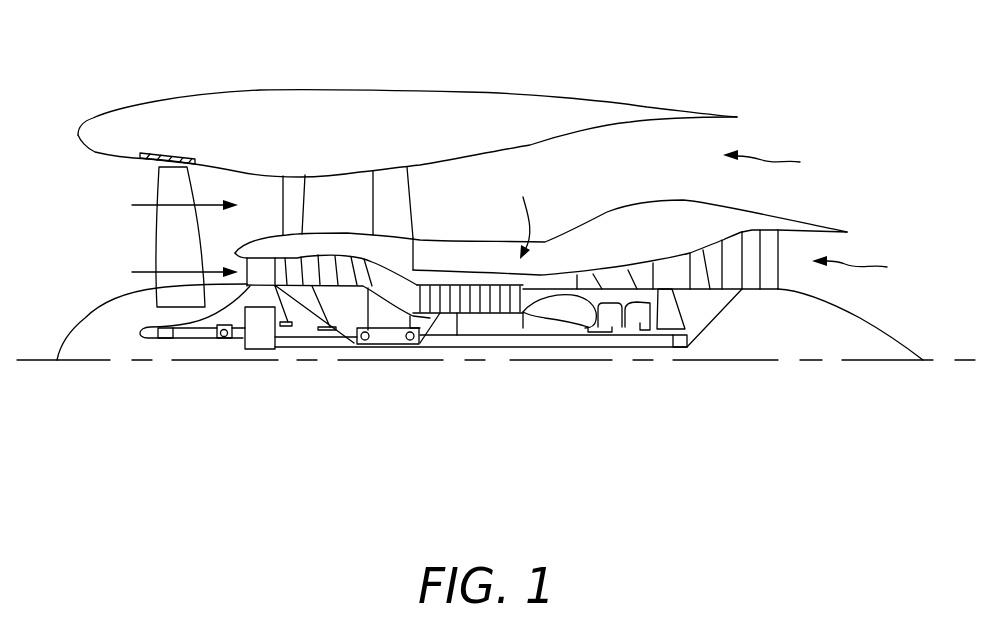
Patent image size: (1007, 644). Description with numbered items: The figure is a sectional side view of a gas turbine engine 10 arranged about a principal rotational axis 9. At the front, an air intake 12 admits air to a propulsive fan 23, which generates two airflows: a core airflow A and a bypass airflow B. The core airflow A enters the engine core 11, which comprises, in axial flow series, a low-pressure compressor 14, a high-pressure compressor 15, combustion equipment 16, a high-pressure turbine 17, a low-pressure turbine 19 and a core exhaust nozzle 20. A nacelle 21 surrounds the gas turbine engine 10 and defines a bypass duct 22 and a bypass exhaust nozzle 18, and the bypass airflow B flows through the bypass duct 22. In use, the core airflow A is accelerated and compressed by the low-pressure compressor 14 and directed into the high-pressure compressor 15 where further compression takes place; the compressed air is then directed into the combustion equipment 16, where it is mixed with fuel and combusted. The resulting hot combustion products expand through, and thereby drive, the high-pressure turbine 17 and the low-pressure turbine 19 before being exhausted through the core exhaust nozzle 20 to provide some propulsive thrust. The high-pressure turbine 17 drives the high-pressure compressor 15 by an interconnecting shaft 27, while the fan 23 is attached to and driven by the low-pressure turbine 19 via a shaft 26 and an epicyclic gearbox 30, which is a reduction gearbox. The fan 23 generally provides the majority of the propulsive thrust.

The principal rotational axis 9 is at (730, 361).
The gas turbine engine 10 is at (153, 104).
The core 11 is at (530, 215).
The air intake 12 is at (99, 183).
The low-pressure compressor 14 is at (328, 263).
The high-pressure compressor 15 is at (475, 297).
The combustion equipment 16 is at (552, 302).
The high-pressure turbine 17 is at (613, 272).
The low-pressure turbine 19 is at (750, 250).
The bypass exhaust nozzle 18 is at (775, 164).
The core exhaust nozzle 20 is at (805, 308).
The nacelle 21 is at (385, 104).
The bypass duct 22 is at (678, 172).
The propulsive fan 23 is at (158, 238).
The shaft 26 is at (468, 348).
The interconnecting shaft 27 is at (512, 336).
The epicyclic gearbox 30 is at (258, 338).
The core airflow A is at (173, 271).
The bypass airflow B is at (174, 205).